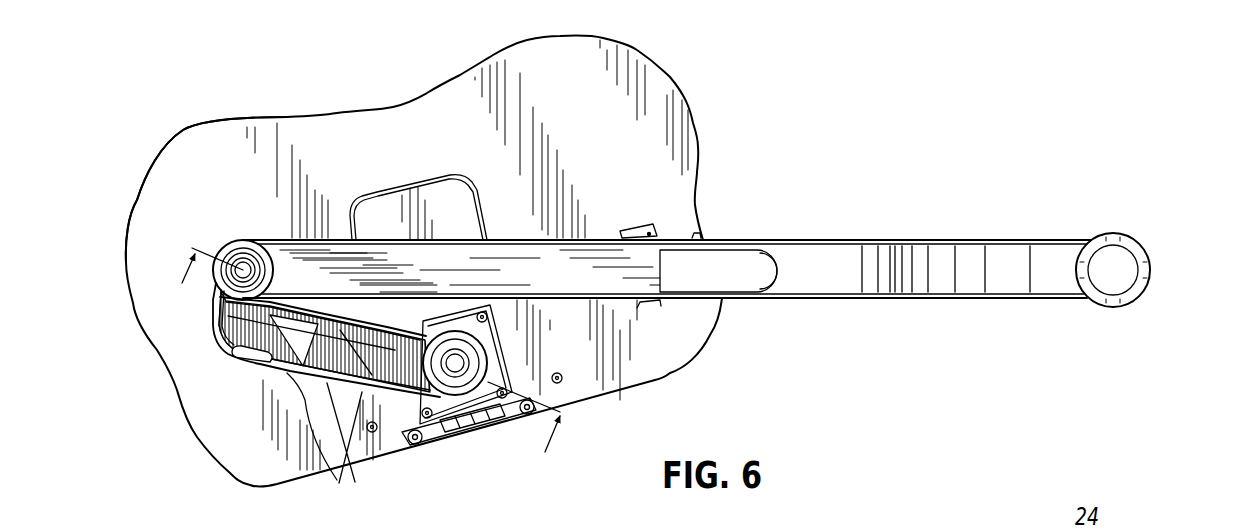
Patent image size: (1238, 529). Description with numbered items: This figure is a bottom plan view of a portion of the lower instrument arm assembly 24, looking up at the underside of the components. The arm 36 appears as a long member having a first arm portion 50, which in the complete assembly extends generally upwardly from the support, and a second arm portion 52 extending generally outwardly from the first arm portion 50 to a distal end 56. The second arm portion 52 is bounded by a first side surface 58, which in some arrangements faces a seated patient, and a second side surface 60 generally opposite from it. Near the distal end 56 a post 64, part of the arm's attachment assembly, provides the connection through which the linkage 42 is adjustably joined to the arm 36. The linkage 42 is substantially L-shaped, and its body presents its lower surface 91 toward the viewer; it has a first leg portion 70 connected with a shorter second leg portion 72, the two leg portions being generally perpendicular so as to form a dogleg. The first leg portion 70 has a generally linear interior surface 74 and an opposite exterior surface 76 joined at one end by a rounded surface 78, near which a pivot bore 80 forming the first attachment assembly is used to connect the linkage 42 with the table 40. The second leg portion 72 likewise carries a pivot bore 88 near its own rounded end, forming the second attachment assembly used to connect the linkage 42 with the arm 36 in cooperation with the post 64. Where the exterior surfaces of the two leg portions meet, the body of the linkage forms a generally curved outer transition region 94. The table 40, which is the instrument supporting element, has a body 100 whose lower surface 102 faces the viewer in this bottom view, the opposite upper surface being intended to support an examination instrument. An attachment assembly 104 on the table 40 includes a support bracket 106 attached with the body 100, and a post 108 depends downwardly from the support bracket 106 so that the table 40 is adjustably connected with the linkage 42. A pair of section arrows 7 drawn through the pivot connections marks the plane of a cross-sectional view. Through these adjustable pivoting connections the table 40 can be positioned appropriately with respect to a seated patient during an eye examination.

The lower instrument arm assembly 24 is at (904, 146).
The arm 36 is at (859, 235).
The table 40 is at (336, 108).
The linkage 42 is at (207, 339).
The first arm portion 50 is at (1116, 305).
The second arm portion 52 is at (1003, 250).
The distal end 56 is at (226, 251).
The first side surface 58 is at (795, 299).
The second side surface 60 is at (788, 239).
The post 64 is at (244, 262).
The first leg portion 70 is at (344, 442).
The second leg portion 72 is at (209, 286).
The interior surface 74 is at (397, 323).
The exterior surface 76 is at (288, 400).
The rounded surface 78 is at (477, 378).
The pivot bore 80 is at (465, 360).
The pivot bore 88 is at (268, 260).
The lower surface 91 is at (407, 372).
The outer transition region 94 is at (227, 347).
The body 100 is at (192, 146).
The lower surface 102 is at (600, 126).
The attachment assembly 104 is at (506, 320).
The support bracket 106 is at (440, 320).
The post 108 is at (455, 365).
The section line 7- 7 is at (367, 352).